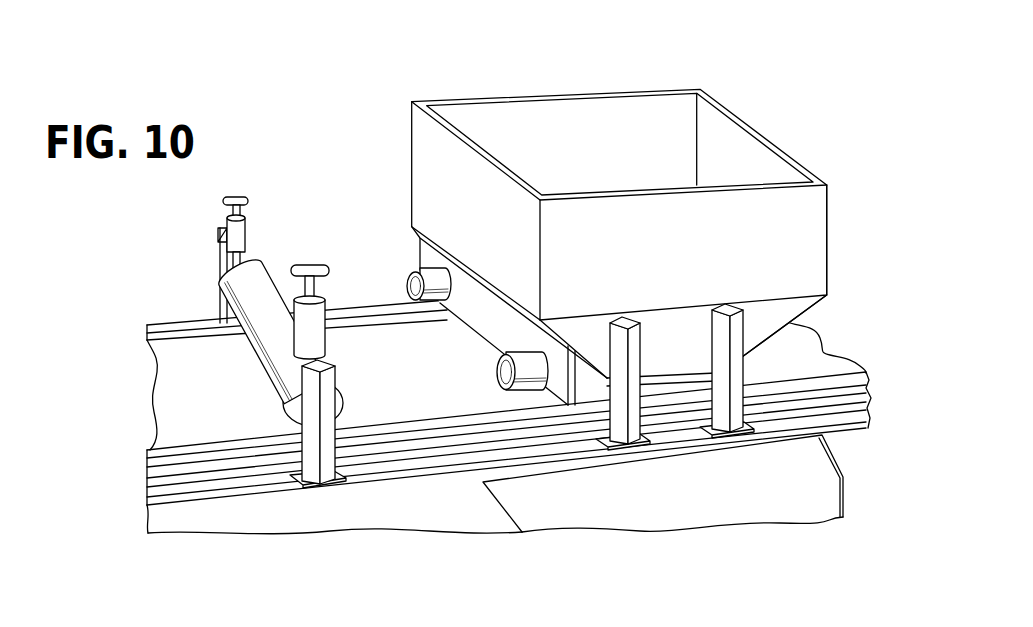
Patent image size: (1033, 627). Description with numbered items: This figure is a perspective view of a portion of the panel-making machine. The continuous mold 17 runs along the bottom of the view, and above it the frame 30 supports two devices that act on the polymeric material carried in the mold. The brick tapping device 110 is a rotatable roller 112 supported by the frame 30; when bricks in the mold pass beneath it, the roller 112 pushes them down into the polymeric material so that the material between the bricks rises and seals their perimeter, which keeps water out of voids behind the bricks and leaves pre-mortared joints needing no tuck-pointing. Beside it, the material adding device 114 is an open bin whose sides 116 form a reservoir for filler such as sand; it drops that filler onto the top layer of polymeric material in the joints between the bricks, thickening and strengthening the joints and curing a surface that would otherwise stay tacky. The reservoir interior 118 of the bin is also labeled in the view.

The continuous mold 17 is at (167, 319).
The frame 30 is at (453, 533).
The brick tapping device 110 is at (218, 238).
The rotatable roller 112 is at (263, 302).
The material adding device 114 is at (743, 117).
The sides 116 is at (822, 212).
The bin interior 118 is at (618, 113).